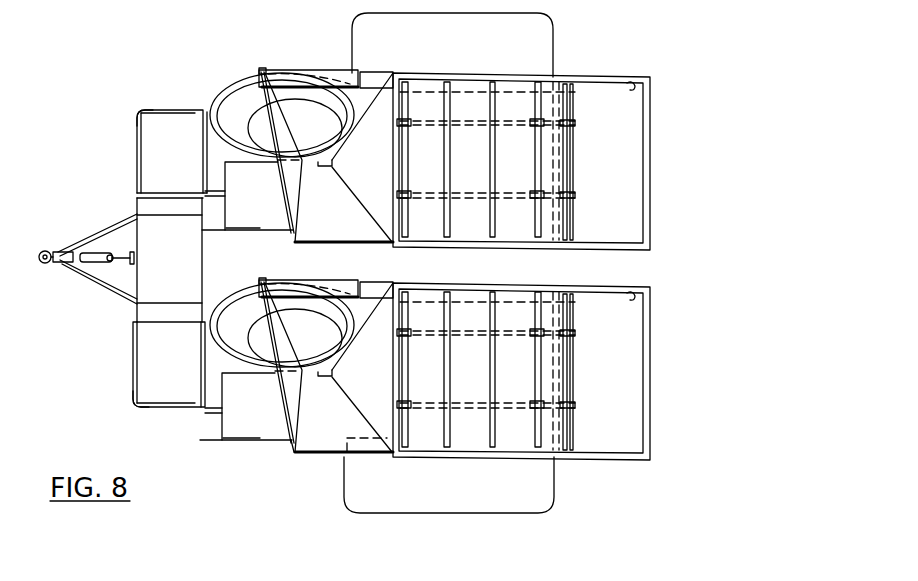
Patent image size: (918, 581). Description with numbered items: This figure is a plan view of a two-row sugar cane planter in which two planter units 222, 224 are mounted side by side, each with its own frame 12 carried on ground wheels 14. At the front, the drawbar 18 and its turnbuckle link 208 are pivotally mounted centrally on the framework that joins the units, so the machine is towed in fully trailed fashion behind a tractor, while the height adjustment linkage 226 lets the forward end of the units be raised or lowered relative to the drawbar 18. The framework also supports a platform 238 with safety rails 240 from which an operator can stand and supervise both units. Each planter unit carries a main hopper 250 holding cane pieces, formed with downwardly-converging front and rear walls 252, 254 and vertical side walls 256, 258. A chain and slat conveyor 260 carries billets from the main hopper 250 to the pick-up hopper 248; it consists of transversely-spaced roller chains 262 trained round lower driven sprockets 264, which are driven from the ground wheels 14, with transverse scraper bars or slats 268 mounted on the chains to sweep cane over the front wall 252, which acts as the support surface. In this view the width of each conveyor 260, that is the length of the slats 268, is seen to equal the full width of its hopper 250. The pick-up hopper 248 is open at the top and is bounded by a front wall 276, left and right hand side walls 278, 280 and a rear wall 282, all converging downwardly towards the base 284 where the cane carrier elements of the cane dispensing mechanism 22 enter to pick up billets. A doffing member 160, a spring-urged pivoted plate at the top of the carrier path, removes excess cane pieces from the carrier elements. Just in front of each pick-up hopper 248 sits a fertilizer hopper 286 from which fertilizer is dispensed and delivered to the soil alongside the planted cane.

The frame 12 is at (208, 190).
The ground wheels 14 is at (556, 45).
The drawbar 18 is at (77, 270).
The cane dispensing mechanism 22 is at (235, 75).
The doffing member 160 is at (320, 70).
The turnbuckle link 208 is at (93, 252).
The planter unit 222 is at (565, 465).
The planter unit 224 is at (651, 66).
The height adjustment linkage 226 is at (100, 292).
The platform 238 is at (110, 350).
The safety rails 240 is at (135, 405).
The pick-up hopper 248 is at (282, 215).
The main hopper 250 is at (651, 183).
The front wall 252 is at (483, 218).
The rear wall 254 is at (620, 166).
The side wall 256 is at (633, 88).
The side wall 258 is at (595, 242).
The conveyor 260 is at (434, 425).
The roller chains 262 is at (430, 120).
The lower driven sprockets 264 is at (560, 395).
The scraper bars or slats 268 is at (535, 105).
The front wall 276 is at (290, 178).
The left hand side wall 278 is at (295, 455).
The right hand side wall 280 is at (393, 282).
The rear wall 282 is at (362, 196).
The base 284 is at (333, 163).
The fertilizer hopper 286 is at (247, 232).